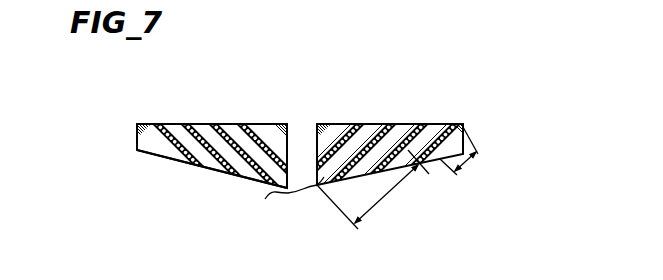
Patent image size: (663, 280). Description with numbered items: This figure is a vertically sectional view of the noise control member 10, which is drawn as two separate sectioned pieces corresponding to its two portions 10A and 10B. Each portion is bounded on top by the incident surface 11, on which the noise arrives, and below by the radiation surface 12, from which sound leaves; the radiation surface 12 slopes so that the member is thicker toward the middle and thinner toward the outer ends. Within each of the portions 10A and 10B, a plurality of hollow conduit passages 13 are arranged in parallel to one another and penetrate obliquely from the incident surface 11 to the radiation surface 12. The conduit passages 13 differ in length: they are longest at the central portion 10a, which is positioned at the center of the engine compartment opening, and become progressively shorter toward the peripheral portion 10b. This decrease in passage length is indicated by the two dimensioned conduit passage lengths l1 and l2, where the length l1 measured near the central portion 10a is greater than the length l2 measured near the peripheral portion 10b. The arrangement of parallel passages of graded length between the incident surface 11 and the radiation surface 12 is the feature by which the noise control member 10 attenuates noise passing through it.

The noise control member 10 is at (305, 121).
The portion of the noise control member 10A is at (380, 154).
The portion of the noise control member 10B is at (239, 155).
The central portion 10a is at (360, 124).
The peripheral portion 10b is at (453, 124).
The incident surface 11 is at (183, 124).
The radiation surface 12 is at (180, 161).
The conduit passages 13 is at (253, 174).
The conduit passage length l1 is at (373, 189).
The conduit passage length l2 is at (463, 160).